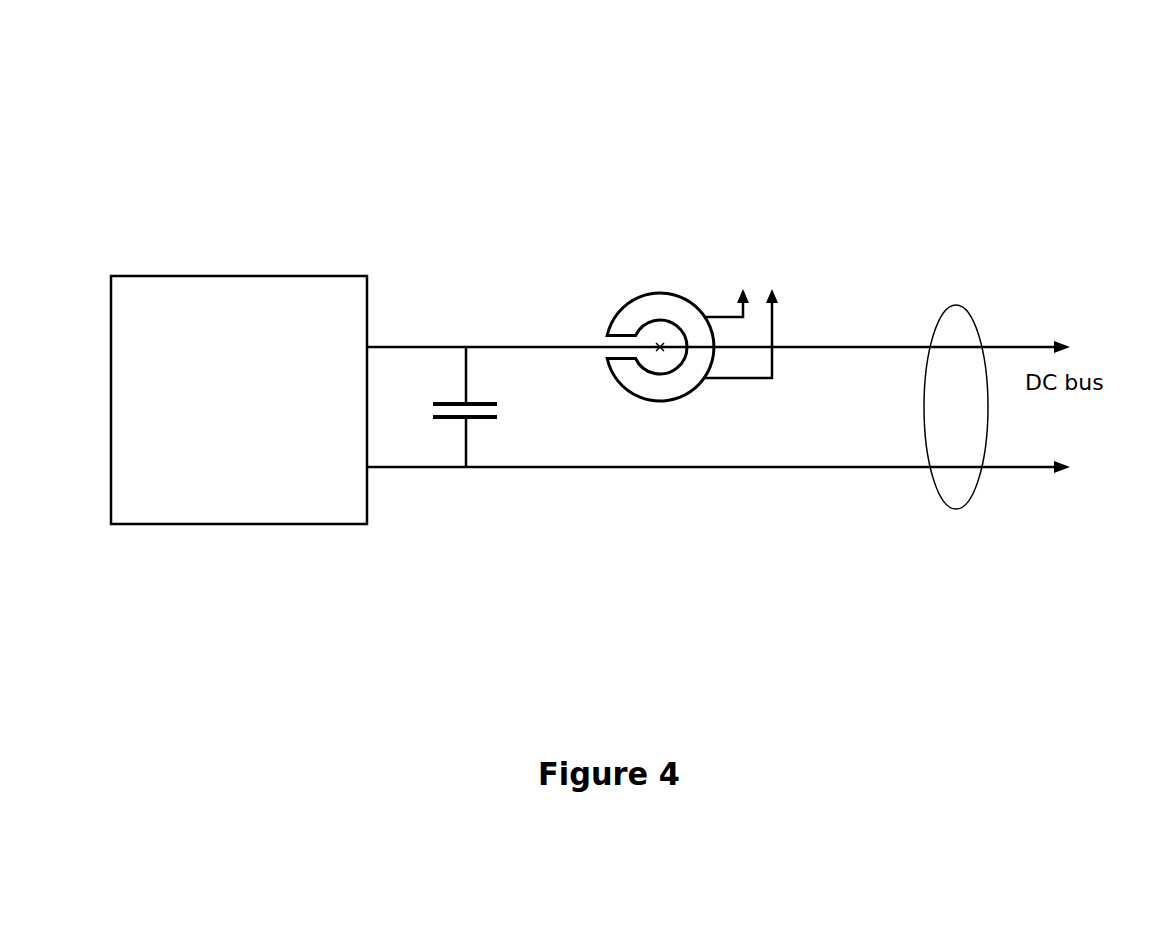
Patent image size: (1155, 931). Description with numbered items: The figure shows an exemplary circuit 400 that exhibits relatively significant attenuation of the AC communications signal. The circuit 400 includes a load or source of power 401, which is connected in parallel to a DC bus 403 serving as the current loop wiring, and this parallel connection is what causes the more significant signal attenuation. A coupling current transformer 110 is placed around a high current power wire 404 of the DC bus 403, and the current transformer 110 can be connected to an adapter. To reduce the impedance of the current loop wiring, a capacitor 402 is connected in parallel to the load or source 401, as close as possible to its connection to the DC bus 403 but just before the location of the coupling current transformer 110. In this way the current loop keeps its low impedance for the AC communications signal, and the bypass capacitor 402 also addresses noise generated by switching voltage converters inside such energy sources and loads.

The circuit 400 is at (1050, 104).
The load or source of power 401 is at (293, 275).
The capacitor 402 is at (477, 403).
The DC bus 403 is at (972, 498).
The high current power wire 404 is at (572, 347).
The coupling current transformer 110 is at (667, 293).